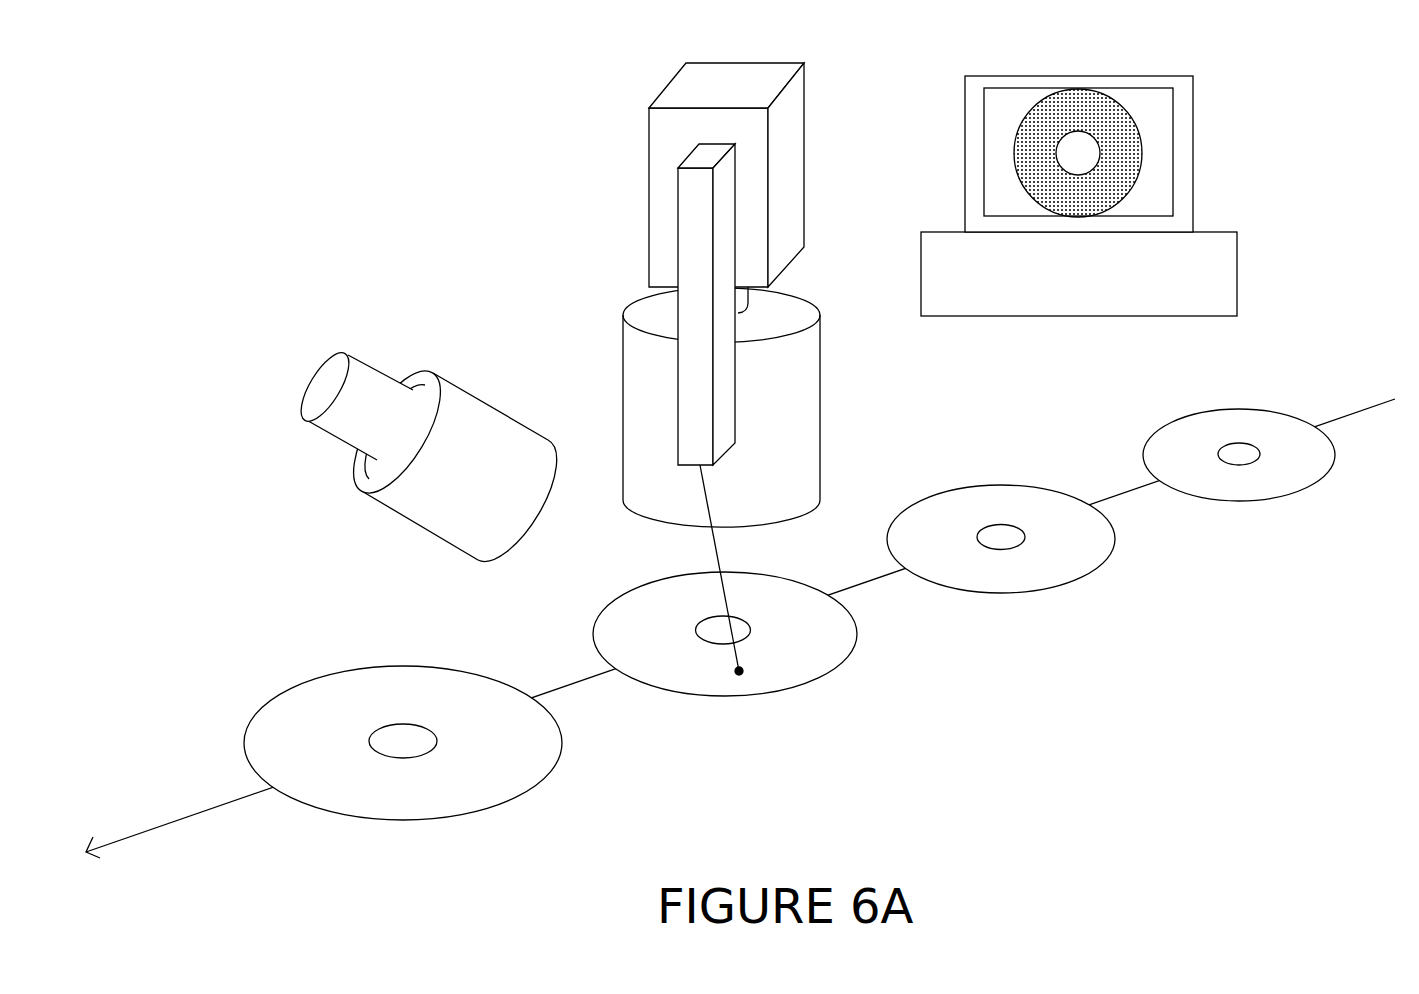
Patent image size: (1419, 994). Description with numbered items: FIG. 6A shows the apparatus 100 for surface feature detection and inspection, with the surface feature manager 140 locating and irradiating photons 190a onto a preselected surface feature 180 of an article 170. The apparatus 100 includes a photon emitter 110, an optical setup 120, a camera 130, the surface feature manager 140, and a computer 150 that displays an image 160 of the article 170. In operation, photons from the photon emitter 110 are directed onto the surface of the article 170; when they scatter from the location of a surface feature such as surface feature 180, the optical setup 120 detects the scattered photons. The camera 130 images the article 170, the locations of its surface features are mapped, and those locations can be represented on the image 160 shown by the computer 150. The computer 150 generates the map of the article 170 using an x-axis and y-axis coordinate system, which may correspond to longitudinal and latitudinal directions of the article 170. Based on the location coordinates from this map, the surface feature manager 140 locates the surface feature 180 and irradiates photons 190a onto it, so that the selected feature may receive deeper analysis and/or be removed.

The apparatus 100 is at (178, 205).
The photon emitter 110 is at (447, 507).
The optical setup 120 is at (662, 402).
The camera 130 is at (663, 168).
The surface feature manager 140 is at (693, 256).
The computer 150 is at (967, 252).
The image 160 is at (1105, 177).
The article 170 is at (793, 648).
The surface feature 180 is at (739, 671).
The photons 190a is at (717, 550).